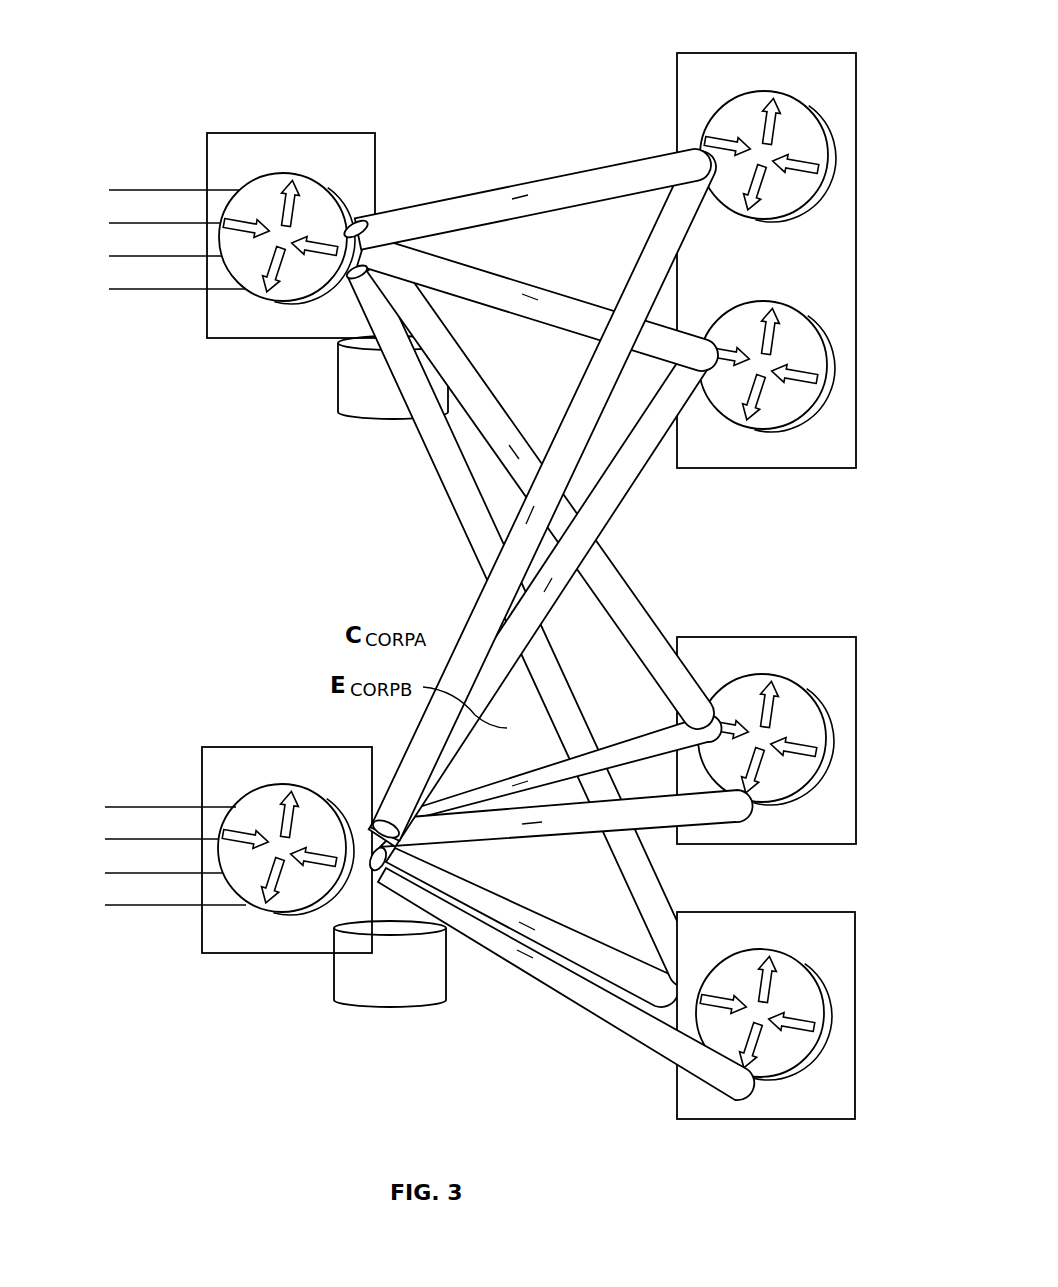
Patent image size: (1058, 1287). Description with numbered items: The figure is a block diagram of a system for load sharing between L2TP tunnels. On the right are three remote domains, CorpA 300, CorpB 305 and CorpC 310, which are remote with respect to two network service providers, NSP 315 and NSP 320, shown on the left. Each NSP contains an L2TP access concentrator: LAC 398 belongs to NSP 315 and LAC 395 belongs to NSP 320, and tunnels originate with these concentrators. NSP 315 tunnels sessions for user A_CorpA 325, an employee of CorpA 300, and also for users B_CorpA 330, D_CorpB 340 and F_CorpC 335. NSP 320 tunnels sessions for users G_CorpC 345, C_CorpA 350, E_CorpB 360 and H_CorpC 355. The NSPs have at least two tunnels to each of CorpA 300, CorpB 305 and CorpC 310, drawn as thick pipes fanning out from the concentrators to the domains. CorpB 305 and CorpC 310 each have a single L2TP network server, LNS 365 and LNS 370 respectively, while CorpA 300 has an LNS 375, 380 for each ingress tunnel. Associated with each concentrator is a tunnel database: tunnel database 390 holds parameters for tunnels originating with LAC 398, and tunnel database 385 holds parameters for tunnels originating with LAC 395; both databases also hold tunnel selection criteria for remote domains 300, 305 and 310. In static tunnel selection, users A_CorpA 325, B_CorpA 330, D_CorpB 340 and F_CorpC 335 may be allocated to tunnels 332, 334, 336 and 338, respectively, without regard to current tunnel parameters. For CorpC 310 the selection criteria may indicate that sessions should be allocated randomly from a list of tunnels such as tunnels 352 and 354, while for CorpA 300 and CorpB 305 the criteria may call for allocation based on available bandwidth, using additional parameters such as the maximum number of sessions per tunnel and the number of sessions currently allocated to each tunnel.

The CorpA 300 is at (766, 243).
The CorpB 305 is at (766, 727).
The CorpC 310 is at (766, 1002).
The NSP 315 is at (289, 216).
The NSP 320 is at (285, 832).
The user A_CorpA 325 is at (107, 176).
The user B_CorpA 330 is at (107, 209).
The user F_CorpC 335 is at (107, 275).
The user D_CorpB 340 is at (107, 242).
The user G_CorpC 345 is at (104, 793).
The user C_CorpA 350 is at (104, 826).
The user H_CorpC 355 is at (104, 892).
The user E_CorpB 360 is at (104, 859).
The tunnel 332 is at (625, 160).
The tunnel 334 is at (592, 306).
The tunnel 336 is at (468, 357).
The tunnel 338 is at (440, 489).
The tunnel 352 is at (523, 971).
The tunnel 354 is at (640, 1020).
The LNS 365 is at (818, 795).
The LNS 370 is at (815, 1068).
The LNS 375 is at (805, 100).
The LNS 380 is at (812, 315).
The tunnel database 385 is at (397, 1008).
The tunnel database 390 is at (397, 420).
The LAC 395 is at (311, 785).
The LAC 398 is at (314, 173).